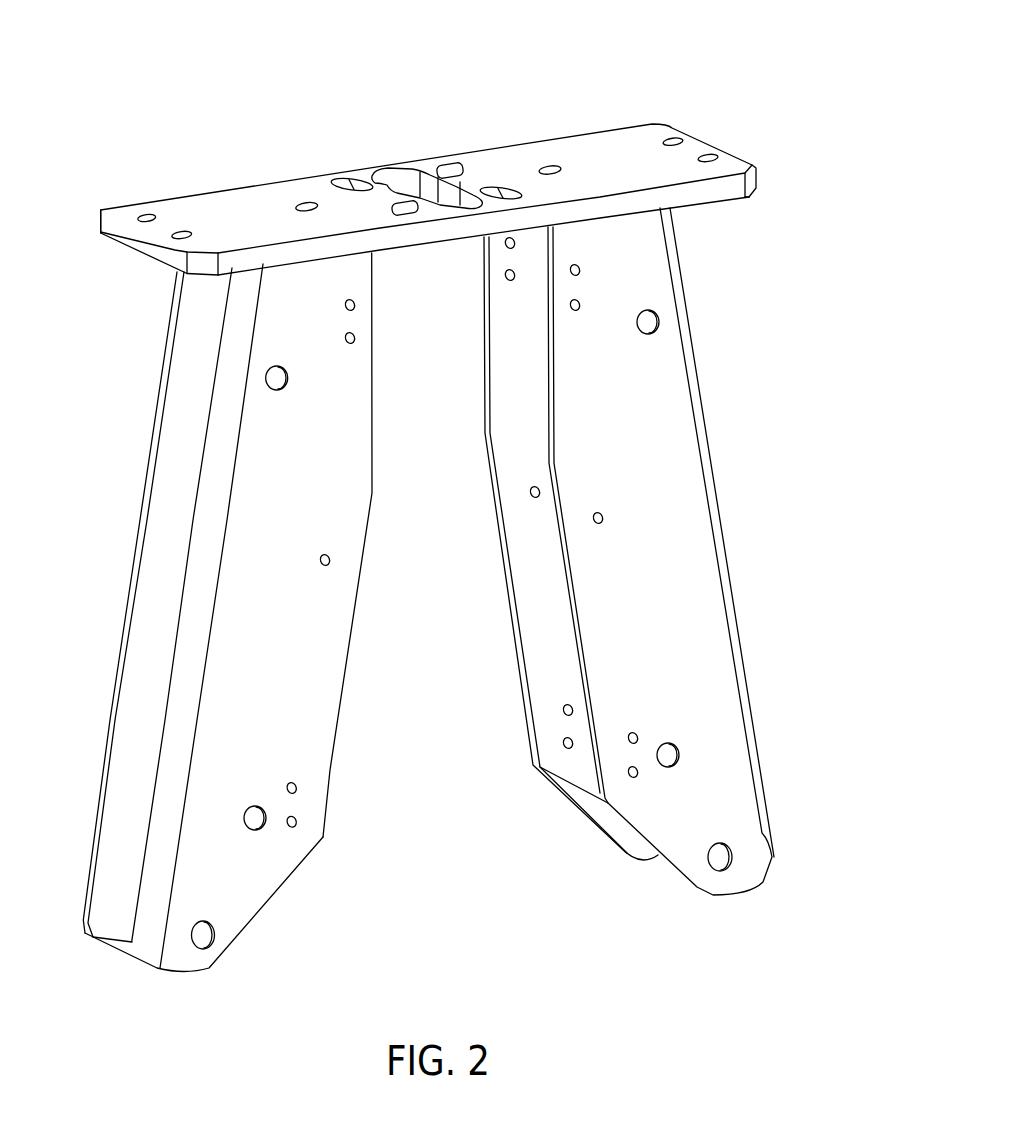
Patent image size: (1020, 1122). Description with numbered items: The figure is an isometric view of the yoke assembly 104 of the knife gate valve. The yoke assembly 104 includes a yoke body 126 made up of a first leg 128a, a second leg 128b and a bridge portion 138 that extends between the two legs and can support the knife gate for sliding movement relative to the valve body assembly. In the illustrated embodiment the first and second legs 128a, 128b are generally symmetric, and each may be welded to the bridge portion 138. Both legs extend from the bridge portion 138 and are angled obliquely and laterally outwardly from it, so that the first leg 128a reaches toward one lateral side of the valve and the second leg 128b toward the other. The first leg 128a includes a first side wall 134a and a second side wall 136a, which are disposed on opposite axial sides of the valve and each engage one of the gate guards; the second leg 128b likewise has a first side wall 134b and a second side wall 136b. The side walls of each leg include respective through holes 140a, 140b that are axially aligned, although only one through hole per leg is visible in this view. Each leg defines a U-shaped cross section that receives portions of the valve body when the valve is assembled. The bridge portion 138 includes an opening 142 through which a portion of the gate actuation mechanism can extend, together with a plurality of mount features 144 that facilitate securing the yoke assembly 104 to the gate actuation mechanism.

The yoke assembly 104 is at (762, 91).
The bridge portion 138 is at (601, 136).
The opening 142 is at (401, 172).
The mount features 144 is at (187, 226).
The yoke body 126 is at (152, 433).
The first leg 128a is at (152, 573).
The second leg 128b is at (738, 523).
The first side wall 134a is at (302, 735).
The first side wall 134b is at (693, 648).
The second side wall 136a is at (106, 760).
The second side wall 136b is at (509, 599).
The through hole 140a is at (209, 952).
The through hole 140b is at (734, 865).